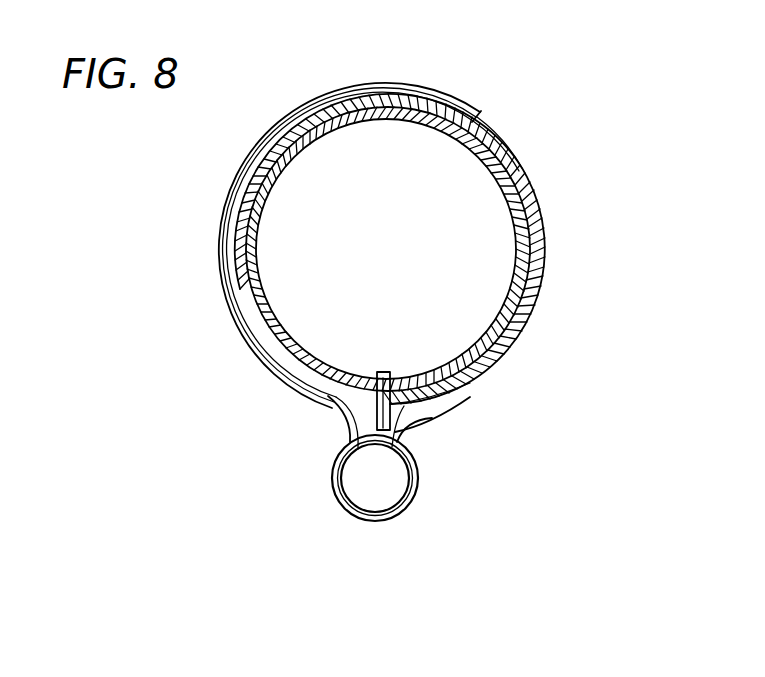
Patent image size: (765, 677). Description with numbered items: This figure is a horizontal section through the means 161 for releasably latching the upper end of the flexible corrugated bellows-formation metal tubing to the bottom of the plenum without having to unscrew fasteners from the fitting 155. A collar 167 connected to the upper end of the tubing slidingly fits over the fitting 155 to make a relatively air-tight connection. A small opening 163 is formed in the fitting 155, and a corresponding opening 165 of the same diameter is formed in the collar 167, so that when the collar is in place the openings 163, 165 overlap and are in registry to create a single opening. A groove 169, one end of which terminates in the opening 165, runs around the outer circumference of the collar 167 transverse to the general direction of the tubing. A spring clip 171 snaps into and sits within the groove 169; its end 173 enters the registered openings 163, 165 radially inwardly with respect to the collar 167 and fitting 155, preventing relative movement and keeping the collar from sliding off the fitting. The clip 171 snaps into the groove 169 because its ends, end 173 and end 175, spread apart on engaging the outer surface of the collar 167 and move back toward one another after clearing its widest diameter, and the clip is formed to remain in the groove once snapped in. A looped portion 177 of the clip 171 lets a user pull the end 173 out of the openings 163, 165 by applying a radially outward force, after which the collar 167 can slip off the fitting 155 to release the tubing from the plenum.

The fitting 155 is at (388, 121).
The means for releasably latching 161 is at (297, 464).
The opening 163 is at (418, 372).
The opening 165 is at (397, 432).
The collar 167 is at (541, 273).
The groove 169 is at (515, 157).
The spring clip 171 is at (228, 268).
The end 173 is at (383, 370).
The end 175 is at (468, 104).
The looped portion 177 is at (372, 521).